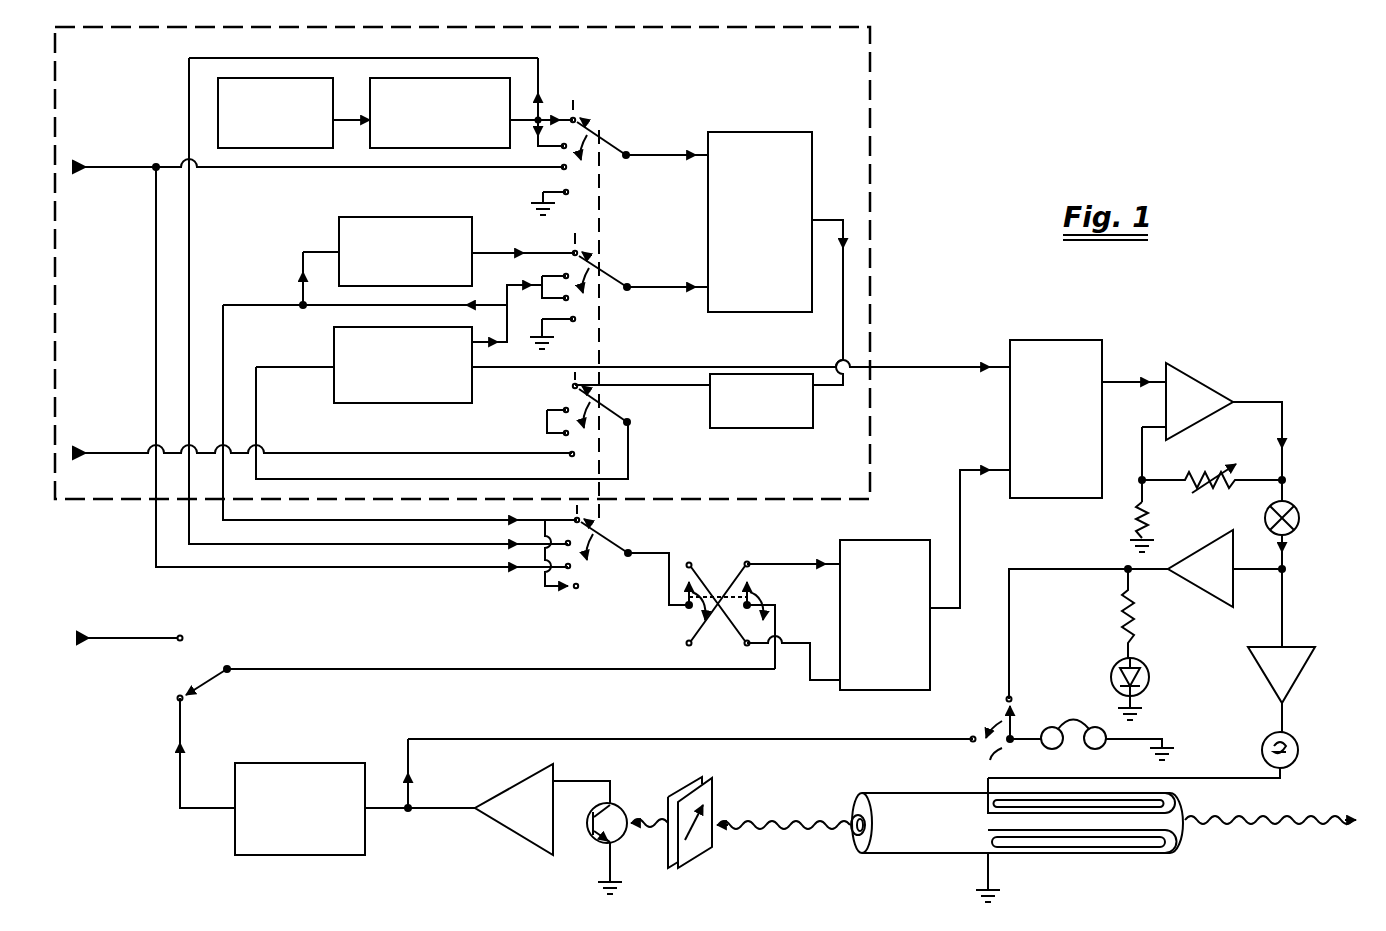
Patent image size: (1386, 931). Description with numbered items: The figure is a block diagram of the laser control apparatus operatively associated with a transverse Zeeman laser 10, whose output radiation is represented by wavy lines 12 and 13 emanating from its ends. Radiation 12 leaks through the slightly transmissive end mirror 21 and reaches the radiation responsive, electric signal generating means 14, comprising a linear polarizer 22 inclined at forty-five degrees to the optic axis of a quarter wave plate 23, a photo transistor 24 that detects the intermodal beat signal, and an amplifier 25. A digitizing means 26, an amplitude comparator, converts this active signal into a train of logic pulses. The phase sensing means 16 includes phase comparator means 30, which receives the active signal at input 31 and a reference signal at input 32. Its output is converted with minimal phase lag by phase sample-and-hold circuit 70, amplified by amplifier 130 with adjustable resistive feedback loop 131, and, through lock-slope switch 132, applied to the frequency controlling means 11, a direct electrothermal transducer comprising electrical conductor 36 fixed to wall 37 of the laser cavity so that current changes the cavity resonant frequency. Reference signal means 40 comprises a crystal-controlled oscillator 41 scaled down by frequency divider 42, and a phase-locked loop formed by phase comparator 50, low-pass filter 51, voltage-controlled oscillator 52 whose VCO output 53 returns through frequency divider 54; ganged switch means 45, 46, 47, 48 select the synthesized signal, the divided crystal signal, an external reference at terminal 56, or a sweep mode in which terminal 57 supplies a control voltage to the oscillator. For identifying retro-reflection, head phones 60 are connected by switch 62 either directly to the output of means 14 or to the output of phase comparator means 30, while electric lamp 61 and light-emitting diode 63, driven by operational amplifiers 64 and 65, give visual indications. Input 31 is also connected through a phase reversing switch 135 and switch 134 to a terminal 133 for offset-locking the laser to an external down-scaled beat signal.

The laser 10 is at (1100, 853).
The means responsive to an electric signal for controlling the light frequency 11 is at (988, 780).
The laser output radiation 12 is at (790, 832).
The main beam 13 is at (1240, 822).
The radiation responsive, electric signal generating means 14 is at (560, 771).
The means for sensing changes in phase of the electric signal 16 is at (1003, 427).
The end mirror 21 is at (856, 838).
The linear polarizer 22 is at (714, 800).
The quarter wave plate 23 is at (700, 780).
The photo transistor 24 is at (620, 838).
The amplifier 25 is at (512, 832).
The digitizing means 26 is at (300, 855).
The phase comparator means 30 is at (905, 690).
The input 31 is at (832, 566).
The input 32 is at (811, 680).
The electrical conductor 36 is at (1175, 810).
The wall 37 is at (990, 825).
The reference signal means 40 is at (870, 130).
The crystal-controlled oscillator 41 is at (333, 100).
The frequency divider 42 is at (370, 128).
The switch means 45 is at (603, 141).
The switch means 46 is at (608, 270).
The switch means 47 is at (611, 415).
The switch means 48 is at (611, 545).
The phase comparator 50 is at (775, 312).
The low-pass filter 51 is at (775, 428).
The voltage-controlled oscillator 52 is at (405, 403).
The VCO output 53 is at (503, 342).
The frequency divider 54 is at (418, 217).
The terminal 56 is at (134, 172).
The terminal 57 is at (134, 458).
The head phones 60 is at (1098, 750).
The electric lamp 61 is at (1298, 748).
The switch 62 is at (992, 735).
The light-emitting diode 63 is at (1142, 665).
The operational amplifier 64 is at (1298, 676).
The operational amplifier 65 is at (1192, 580).
The phase sample-and-hold circuit 70 is at (1077, 498).
The amplifier 130 is at (1192, 426).
The adjustable resistive feedback loop 131 is at (1148, 515).
The lock-slope switch 132 is at (1299, 523).
The terminal 133 is at (138, 641).
The switch 134 is at (207, 679).
The phase reversing switch 135 is at (727, 572).